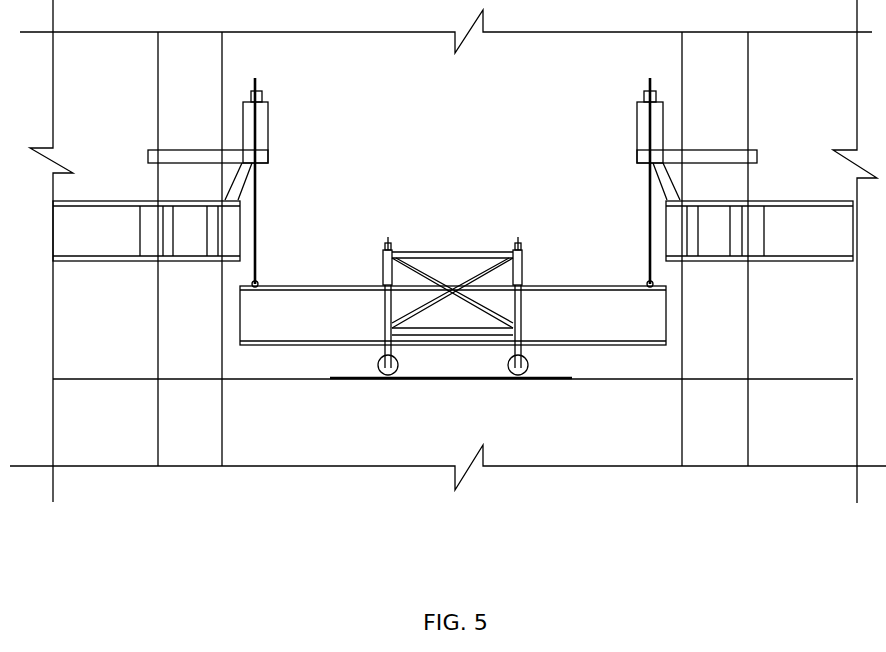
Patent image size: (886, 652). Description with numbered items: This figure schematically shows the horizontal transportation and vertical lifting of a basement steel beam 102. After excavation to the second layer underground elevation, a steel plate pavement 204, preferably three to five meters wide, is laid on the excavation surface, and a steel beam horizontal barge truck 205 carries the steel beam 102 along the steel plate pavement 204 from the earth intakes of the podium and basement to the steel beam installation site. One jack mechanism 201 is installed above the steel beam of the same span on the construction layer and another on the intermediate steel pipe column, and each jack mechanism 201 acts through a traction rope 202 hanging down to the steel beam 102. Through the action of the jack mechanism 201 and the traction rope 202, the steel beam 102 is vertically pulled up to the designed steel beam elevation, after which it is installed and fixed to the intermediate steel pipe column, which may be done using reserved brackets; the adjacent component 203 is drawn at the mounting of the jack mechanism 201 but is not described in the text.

The steel beam 102 is at (310, 332).
The jack mechanism 201 is at (642, 131).
The traction rope 202 is at (648, 248).
The mounting bracket 203 is at (235, 158).
The steel plate pavement 204 is at (485, 378).
The steel beam horizontal barge truck 205 is at (435, 308).